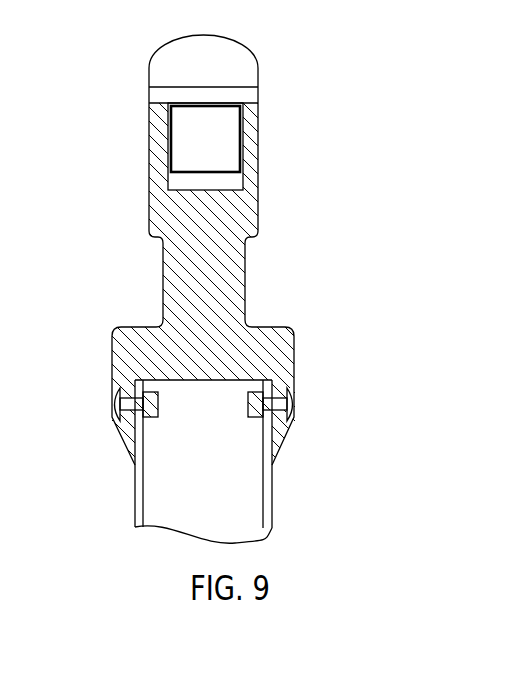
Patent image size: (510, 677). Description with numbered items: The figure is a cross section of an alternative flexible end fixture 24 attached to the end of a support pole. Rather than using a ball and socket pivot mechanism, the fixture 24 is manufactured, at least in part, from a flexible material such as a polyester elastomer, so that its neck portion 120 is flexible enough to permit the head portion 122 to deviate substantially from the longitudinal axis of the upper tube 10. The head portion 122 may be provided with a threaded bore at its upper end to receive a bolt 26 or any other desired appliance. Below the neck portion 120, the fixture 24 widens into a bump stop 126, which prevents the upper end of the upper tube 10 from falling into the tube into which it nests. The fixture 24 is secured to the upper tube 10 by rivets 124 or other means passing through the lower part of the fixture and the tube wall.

The upper tube 10 is at (139, 500).
The fixture 24 is at (292, 187).
The bolt 26 is at (150, 67).
The neck portion 120 is at (246, 283).
The head portion 122 is at (149, 163).
The rivets 124 is at (296, 402).
The bump stop 126 is at (134, 352).